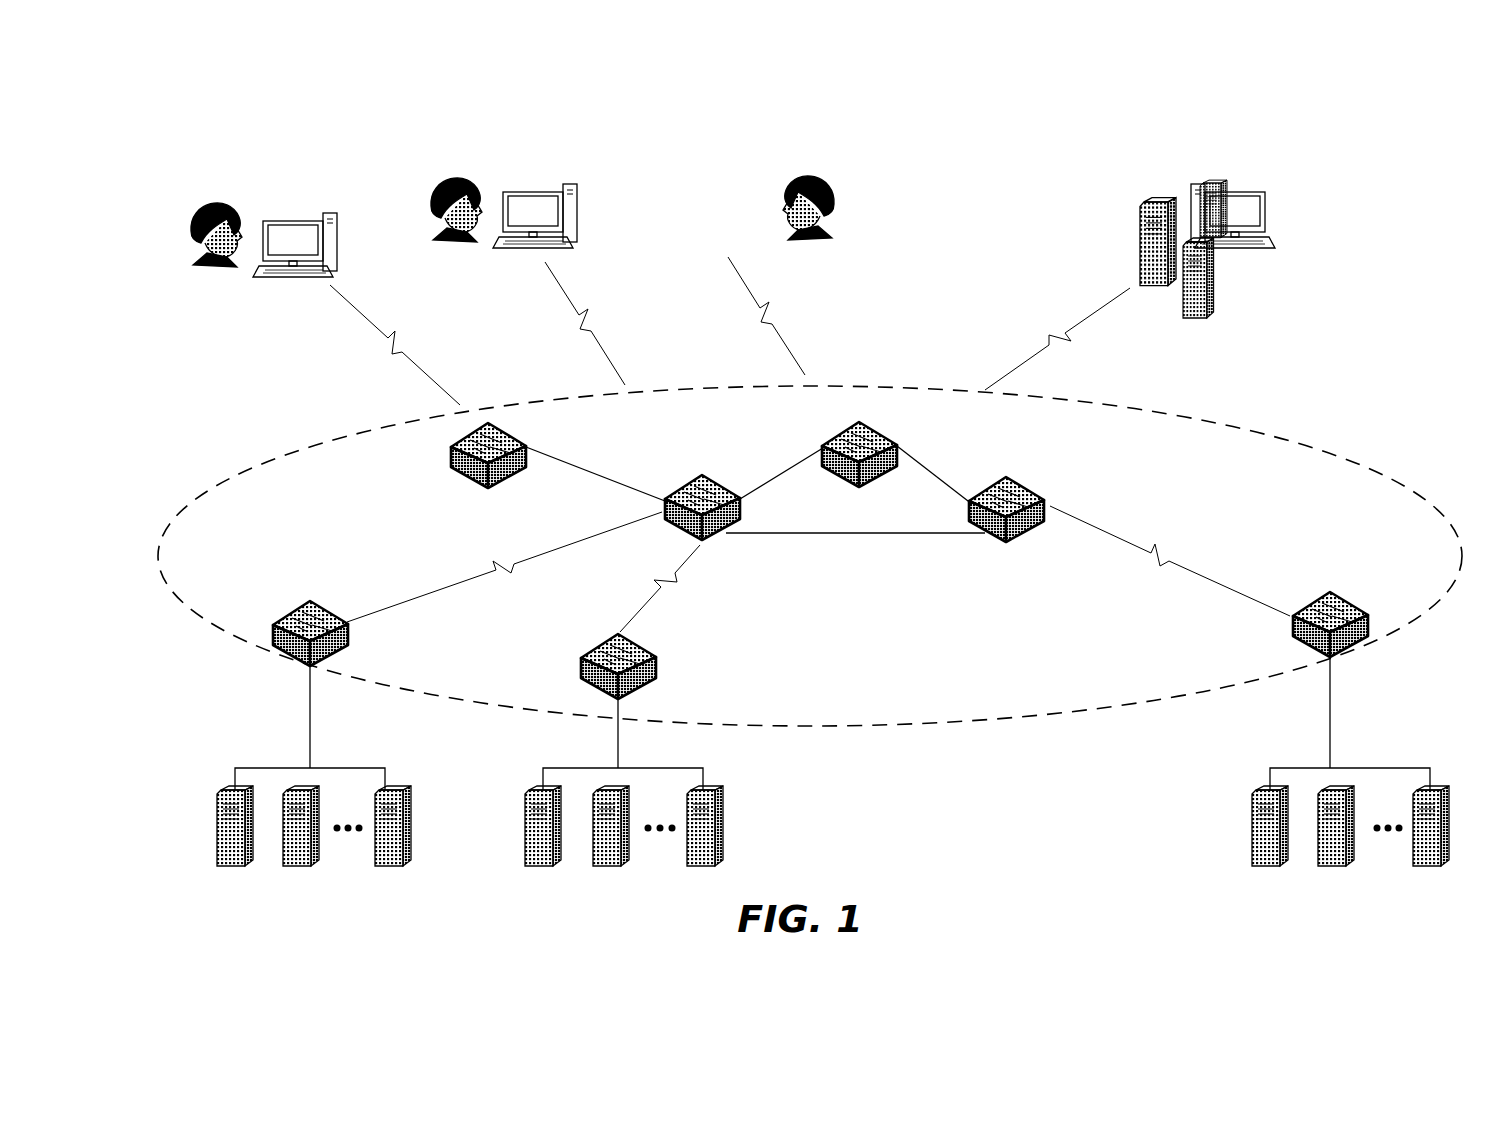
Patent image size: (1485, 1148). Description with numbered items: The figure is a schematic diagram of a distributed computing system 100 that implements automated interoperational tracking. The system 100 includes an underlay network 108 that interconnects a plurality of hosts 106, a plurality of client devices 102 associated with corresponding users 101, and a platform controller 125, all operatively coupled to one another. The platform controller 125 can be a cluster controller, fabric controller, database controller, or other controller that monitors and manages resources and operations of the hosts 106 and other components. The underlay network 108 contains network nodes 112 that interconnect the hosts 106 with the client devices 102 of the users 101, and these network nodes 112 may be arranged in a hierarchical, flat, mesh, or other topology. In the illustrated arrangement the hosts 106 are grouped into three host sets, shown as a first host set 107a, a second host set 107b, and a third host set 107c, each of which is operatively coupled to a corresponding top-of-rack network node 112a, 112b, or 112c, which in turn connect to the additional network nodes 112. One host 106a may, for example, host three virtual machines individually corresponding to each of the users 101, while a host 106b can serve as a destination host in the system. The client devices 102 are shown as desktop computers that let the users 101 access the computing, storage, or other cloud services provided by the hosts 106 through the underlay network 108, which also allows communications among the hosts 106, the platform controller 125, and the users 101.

The distributed computing system 100 is at (1310, 160).
The user 101 is at (176, 140).
The client device 102 is at (312, 213).
The host 106 is at (385, 790).
The host 106a is at (215, 792).
The destination host 106b is at (702, 790).
The first host set 107a is at (773, 795).
The second host set 107b is at (609, 804).
The third host set 107c is at (1400, 734).
The underlay network 108 is at (810, 556).
The network node 112 is at (450, 443).
The top-of-rack network node 112a is at (278, 612).
The top-of-rack network node 112b is at (610, 640).
The top-of-rack network node 112c is at (1352, 600).
The platform controller 125 is at (1175, 276).